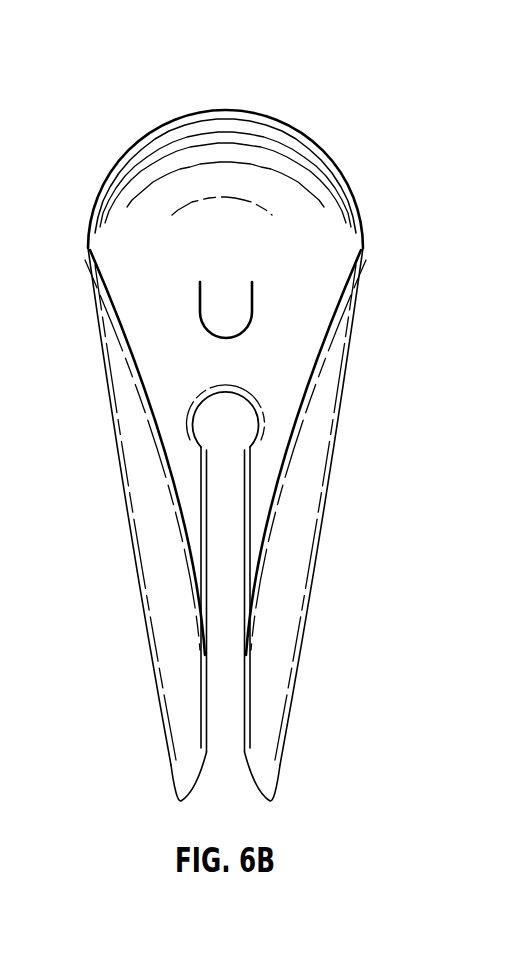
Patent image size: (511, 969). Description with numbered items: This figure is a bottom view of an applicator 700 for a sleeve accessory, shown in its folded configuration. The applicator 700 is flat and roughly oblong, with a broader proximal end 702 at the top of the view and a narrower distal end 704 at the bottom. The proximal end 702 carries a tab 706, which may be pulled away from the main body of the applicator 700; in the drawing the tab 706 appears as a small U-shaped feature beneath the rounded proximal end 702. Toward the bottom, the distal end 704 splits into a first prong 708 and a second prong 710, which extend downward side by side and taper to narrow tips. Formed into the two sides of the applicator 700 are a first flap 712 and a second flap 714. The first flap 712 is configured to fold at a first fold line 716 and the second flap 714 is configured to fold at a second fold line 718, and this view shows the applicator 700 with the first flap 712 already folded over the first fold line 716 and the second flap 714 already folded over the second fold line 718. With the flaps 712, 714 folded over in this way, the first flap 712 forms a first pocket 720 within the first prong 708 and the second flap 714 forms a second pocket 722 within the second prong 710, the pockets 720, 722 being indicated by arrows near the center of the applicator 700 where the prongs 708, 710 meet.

The applicator 700 is at (340, 86).
The proximal end 702 is at (132, 130).
The distal end 704 is at (282, 810).
The tab 706 is at (206, 296).
The first prong 708 is at (142, 662).
The second prong 710 is at (308, 662).
The first flap 712 is at (152, 556).
The second flap 714 is at (300, 553).
The first fold line 716 is at (122, 458).
The second fold line 718 is at (330, 458).
The first pocket 720 is at (162, 413).
The second pocket 722 is at (289, 413).